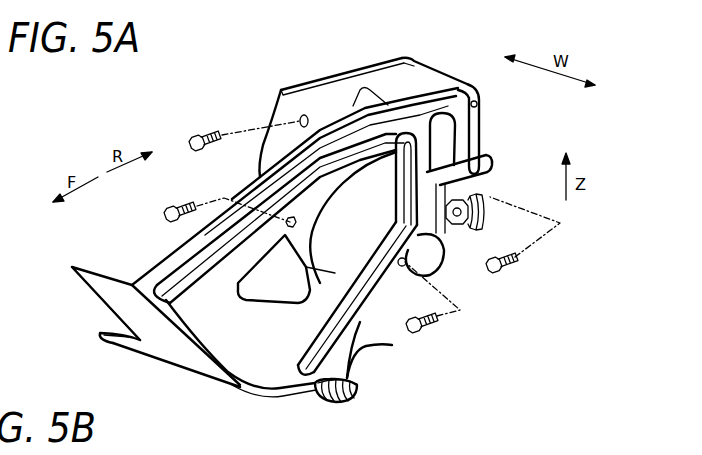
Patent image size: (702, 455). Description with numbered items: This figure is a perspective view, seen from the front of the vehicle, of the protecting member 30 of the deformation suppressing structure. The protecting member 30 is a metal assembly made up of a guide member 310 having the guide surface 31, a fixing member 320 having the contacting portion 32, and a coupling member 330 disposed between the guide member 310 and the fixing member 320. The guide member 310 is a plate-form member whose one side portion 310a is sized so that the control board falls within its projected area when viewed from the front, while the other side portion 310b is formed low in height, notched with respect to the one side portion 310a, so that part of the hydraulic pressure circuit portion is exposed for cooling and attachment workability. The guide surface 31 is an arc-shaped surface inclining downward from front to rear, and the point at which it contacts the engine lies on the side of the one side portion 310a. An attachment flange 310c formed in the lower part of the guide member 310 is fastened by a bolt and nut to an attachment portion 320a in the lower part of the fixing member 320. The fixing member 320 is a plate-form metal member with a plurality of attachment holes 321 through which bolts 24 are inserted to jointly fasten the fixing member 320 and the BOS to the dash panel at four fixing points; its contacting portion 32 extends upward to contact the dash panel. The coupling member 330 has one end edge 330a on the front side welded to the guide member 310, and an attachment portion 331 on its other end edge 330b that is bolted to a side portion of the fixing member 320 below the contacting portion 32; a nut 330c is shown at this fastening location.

The bolt 24 is at (190, 138).
The protecting member 30 is at (244, 98).
The guide surface 31 is at (173, 366).
The contacting portion 32 is at (437, 82).
The guide member 310 is at (225, 395).
The one side portion 310a is at (113, 288).
The other side portion 310b is at (122, 333).
The attachment flange 310c is at (344, 401).
The fixing member 320 is at (492, 145).
The attachment portion 320a is at (357, 393).
The attachment hole 321 is at (304, 114).
The coupling member 330 is at (361, 308).
The one end edge 330a is at (190, 333).
The other end edge 330b is at (470, 178).
The nut 330c is at (472, 219).
The attachment portion 331 is at (447, 229).